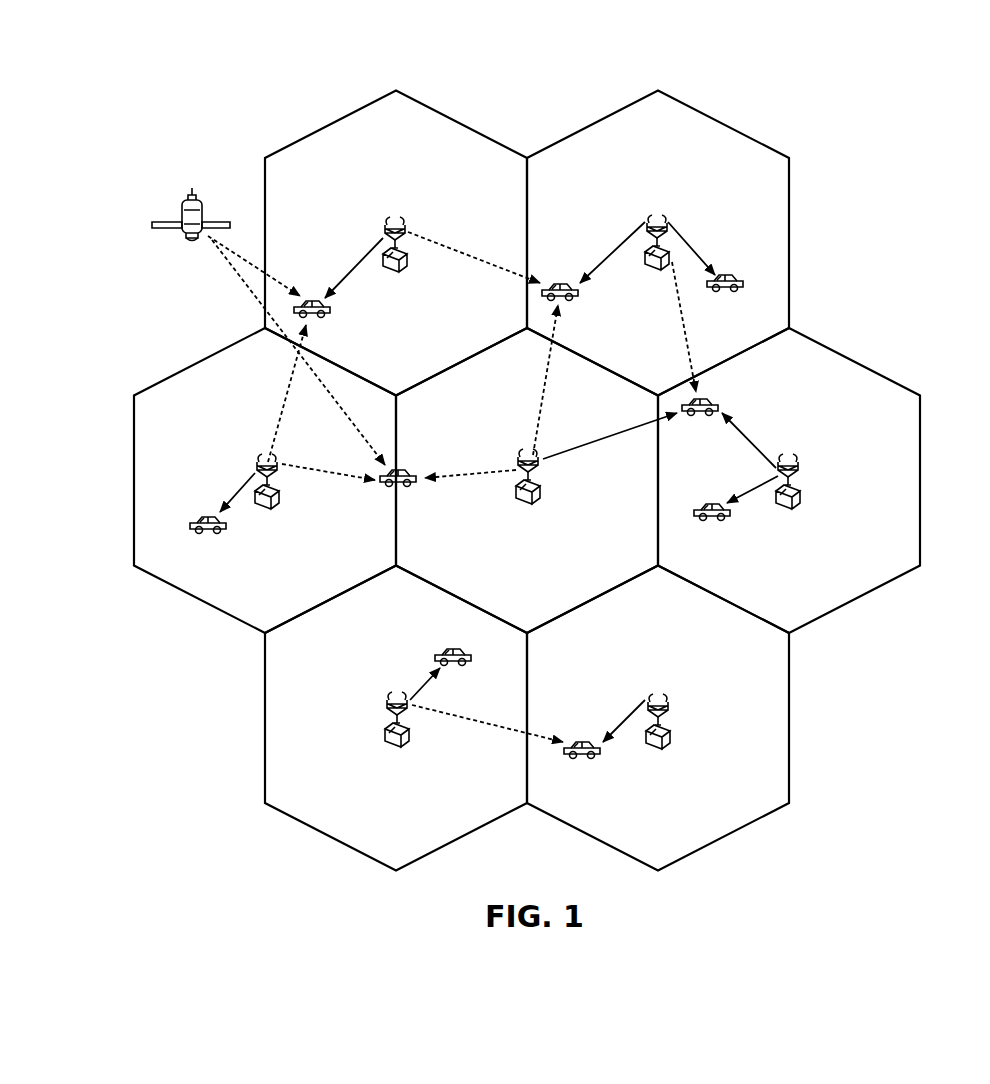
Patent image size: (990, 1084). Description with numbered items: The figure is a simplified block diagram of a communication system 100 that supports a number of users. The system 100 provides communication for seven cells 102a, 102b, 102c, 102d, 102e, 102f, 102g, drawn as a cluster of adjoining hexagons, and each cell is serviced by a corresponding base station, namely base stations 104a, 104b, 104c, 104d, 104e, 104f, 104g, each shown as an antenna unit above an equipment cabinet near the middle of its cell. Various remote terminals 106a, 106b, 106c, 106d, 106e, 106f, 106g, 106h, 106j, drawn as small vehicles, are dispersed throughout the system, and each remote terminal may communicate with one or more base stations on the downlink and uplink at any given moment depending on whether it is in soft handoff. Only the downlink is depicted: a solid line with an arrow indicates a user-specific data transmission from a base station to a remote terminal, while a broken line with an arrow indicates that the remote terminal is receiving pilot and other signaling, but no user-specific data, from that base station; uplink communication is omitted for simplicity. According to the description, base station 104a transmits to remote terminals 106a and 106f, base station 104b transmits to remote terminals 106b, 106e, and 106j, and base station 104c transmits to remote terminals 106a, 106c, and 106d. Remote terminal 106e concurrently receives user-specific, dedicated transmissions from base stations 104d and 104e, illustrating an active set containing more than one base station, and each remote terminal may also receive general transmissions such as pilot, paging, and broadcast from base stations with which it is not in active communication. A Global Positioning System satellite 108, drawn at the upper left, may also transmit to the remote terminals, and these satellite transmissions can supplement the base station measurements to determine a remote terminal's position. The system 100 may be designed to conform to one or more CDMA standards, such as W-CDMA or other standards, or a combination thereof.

The communication system 100 is at (924, 188).
The cell 102a is at (332, 128).
The cell 102b is at (736, 127).
The cell 102c is at (200, 358).
The cell 102d is at (541, 366).
The cell 102e is at (832, 351).
The cell 102f is at (265, 722).
The cell 102g is at (790, 724).
The base station 104a is at (390, 223).
The base station 104b is at (650, 220).
The base station 104c is at (258, 463).
The base station 104d is at (539, 474).
The base station 104e is at (793, 461).
The base station 104f is at (394, 698).
The base station 104g is at (655, 700).
The remote terminal 106a is at (331, 306).
The remote terminal 106b is at (742, 265).
The remote terminal 106c is at (202, 518).
The remote terminal 106d is at (417, 462).
The remote terminal 106e is at (710, 401).
The remote terminal 106f is at (448, 650).
The remote terminal 106g is at (578, 742).
The remote terminal 106h is at (708, 504).
The remote terminal 106j is at (560, 284).
The Global Positioning System satellite 108 is at (191, 194).